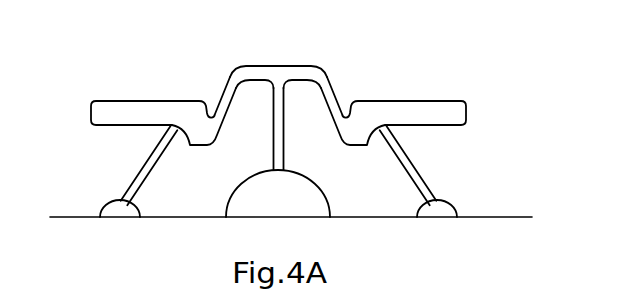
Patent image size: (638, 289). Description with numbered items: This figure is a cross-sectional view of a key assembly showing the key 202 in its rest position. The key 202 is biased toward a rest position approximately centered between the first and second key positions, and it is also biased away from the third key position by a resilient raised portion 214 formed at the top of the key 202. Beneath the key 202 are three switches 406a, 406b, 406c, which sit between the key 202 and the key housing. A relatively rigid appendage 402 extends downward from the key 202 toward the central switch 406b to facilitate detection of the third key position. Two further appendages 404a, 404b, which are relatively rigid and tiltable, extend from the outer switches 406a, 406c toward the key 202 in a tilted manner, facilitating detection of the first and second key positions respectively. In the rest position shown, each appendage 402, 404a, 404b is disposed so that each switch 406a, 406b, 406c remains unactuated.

The key 202 is at (276, 106).
The resilient raised portion 214 is at (262, 66).
The appendage 402 is at (283, 134).
The appendage 404a is at (143, 165).
The appendage 404b is at (413, 167).
The switch 406a is at (113, 213).
The switch 406b is at (240, 212).
The switch 406c is at (442, 217).